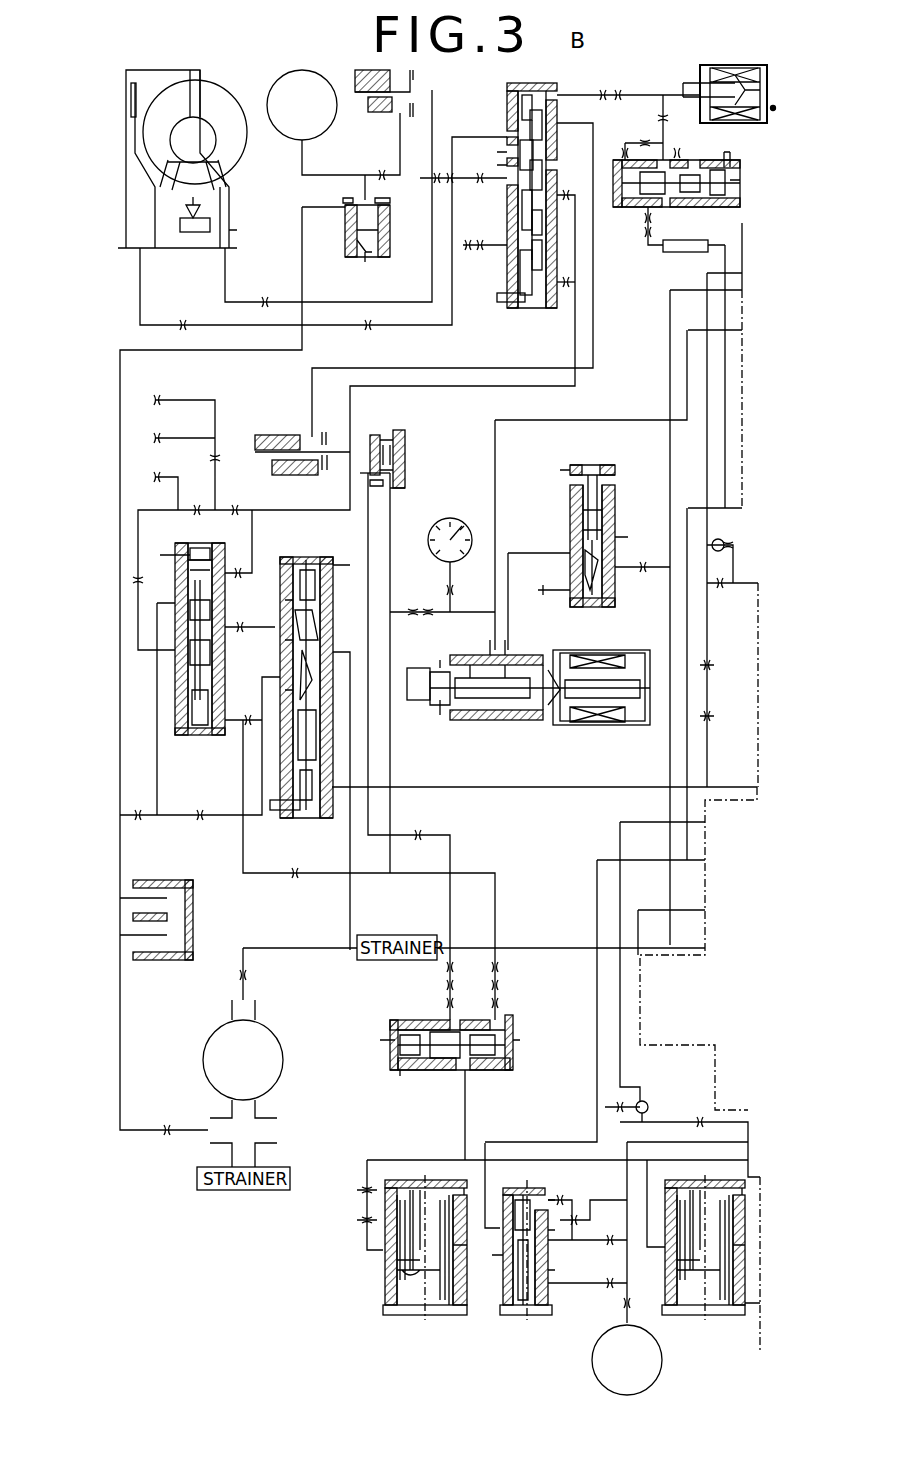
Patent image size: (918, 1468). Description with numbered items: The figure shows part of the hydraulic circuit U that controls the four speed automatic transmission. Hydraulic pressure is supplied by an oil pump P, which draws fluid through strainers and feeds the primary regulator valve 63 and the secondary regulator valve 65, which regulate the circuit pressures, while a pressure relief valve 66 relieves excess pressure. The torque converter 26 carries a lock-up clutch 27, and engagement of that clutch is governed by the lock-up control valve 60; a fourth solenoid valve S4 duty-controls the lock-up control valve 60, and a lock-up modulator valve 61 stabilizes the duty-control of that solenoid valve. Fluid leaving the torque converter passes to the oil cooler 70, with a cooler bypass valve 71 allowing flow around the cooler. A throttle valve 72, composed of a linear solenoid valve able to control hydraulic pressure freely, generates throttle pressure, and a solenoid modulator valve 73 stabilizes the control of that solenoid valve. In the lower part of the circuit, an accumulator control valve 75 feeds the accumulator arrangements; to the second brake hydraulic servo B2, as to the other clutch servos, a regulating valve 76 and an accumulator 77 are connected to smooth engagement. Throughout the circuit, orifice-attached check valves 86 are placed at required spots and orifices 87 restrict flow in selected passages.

The torque converter 26 is at (246, 169).
The lock-up clutch 27 is at (131, 98).
The oil cooler 70 is at (272, 96).
The cooler bypass valve 71 is at (356, 265).
The lock-up control valve 60 is at (502, 95).
The fourth solenoid valve S4 is at (773, 108).
The lock-up modulator valve 61 is at (753, 186).
The pressure relief valve 66 is at (410, 457).
The secondary regulator valve 65 is at (158, 543).
The primary regulator valve 63 is at (331, 554).
The solenoid modulator valve 73 is at (616, 492).
The throttle valve 72 is at (603, 648).
The orifice-attached check valve 86 is at (739, 592).
The orifice 87 is at (726, 742).
The accumulator control valve 75 is at (512, 1034).
The accumulator 77 is at (432, 1326).
The regulating valve 76 is at (526, 1327).
The second brake hydraulic servo B2 is at (668, 1285).
The oil pump P is at (205, 1039).
The hydraulic circuit U is at (57, 325).